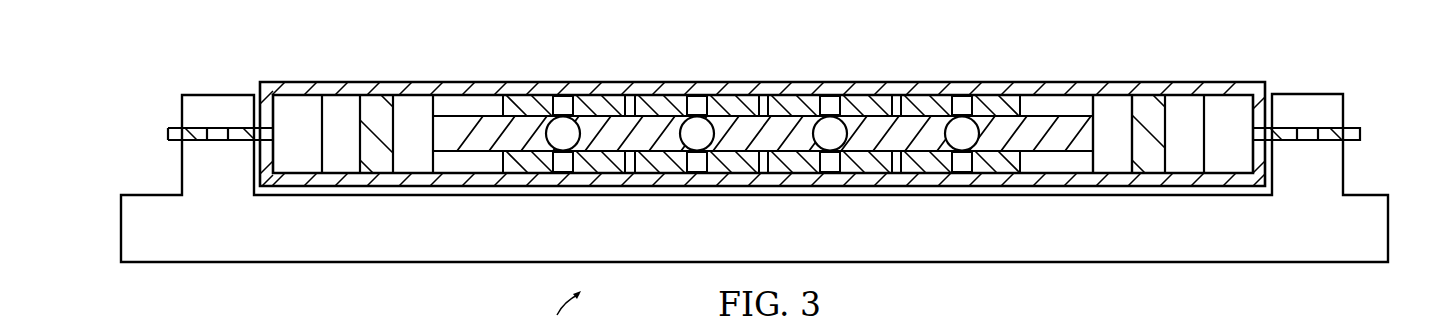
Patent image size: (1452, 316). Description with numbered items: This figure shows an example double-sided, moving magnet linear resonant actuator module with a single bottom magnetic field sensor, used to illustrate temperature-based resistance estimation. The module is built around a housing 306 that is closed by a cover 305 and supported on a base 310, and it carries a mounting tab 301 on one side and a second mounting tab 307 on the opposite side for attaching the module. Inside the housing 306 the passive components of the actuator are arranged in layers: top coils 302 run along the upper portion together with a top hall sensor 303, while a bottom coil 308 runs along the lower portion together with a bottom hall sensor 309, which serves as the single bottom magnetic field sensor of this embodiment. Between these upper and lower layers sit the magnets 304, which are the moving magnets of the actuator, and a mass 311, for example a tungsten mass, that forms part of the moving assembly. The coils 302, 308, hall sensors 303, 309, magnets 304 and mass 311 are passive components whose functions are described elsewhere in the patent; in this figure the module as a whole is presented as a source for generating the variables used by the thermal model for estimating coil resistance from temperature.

The mounting tab 301 is at (168, 132).
The top coils 302 is at (513, 102).
The top hall sensor 303 is at (700, 102).
The magnets 304 is at (855, 105).
The cover 305 is at (1148, 82).
The housing 306 is at (1062, 123).
The mounting tab 307 is at (1360, 132).
The bottom coil 308 is at (518, 165).
The bottom hall sensor 309 is at (697, 165).
The base 310 is at (985, 165).
The mass 311 is at (1105, 165).